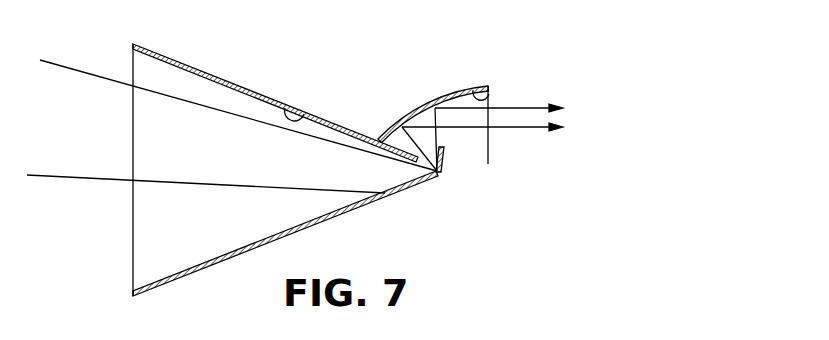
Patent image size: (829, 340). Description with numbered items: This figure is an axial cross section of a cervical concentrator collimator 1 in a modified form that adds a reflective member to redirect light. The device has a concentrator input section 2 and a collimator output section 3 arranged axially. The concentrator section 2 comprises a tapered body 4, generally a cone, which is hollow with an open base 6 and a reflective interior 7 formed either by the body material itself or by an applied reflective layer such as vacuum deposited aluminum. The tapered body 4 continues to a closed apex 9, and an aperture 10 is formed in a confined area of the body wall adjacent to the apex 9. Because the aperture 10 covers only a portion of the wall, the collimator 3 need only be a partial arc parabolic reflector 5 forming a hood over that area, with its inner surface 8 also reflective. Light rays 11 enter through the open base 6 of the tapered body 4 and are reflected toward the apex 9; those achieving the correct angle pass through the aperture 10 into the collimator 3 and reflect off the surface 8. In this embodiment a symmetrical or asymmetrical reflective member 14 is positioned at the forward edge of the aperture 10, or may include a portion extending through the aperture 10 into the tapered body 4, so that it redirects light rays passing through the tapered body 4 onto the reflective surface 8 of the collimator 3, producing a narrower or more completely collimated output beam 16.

The cervical concentrator collimator 1 is at (368, 84).
The concentrator input section 2 is at (202, 72).
The collimator output section 3 is at (474, 81).
The tapered body 4 is at (257, 93).
The parabolic reflector 5 is at (449, 94).
The open base 6 is at (128, 236).
The reflective interior 7 is at (307, 112).
The inner surface 8 is at (490, 92).
The apex 9 is at (448, 172).
The aperture 10 is at (431, 178).
The light rays 11 is at (82, 72).
The reflective member 14 is at (442, 163).
The output beam 16 is at (558, 116).